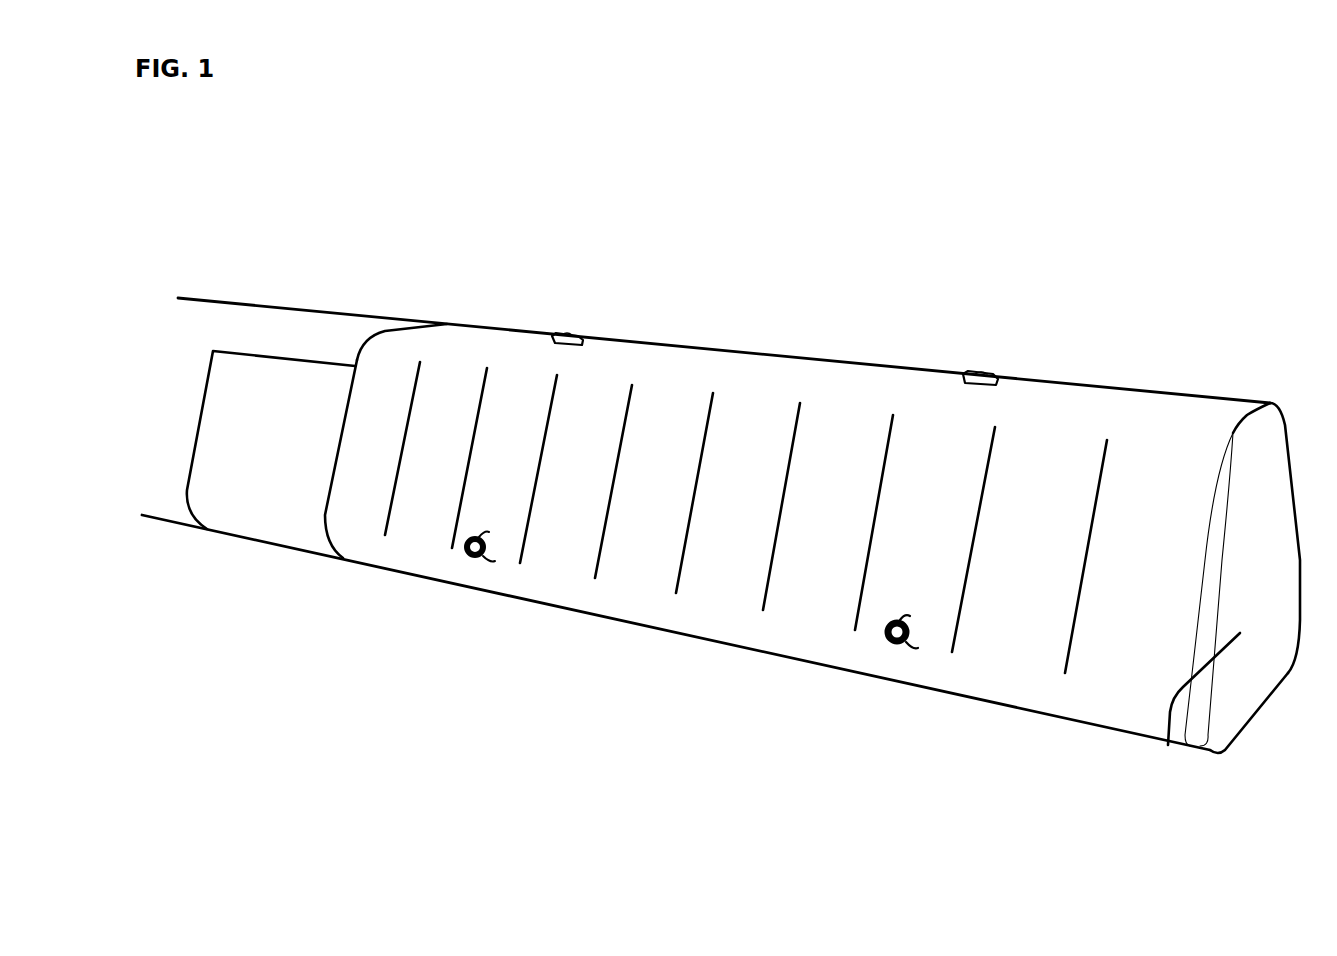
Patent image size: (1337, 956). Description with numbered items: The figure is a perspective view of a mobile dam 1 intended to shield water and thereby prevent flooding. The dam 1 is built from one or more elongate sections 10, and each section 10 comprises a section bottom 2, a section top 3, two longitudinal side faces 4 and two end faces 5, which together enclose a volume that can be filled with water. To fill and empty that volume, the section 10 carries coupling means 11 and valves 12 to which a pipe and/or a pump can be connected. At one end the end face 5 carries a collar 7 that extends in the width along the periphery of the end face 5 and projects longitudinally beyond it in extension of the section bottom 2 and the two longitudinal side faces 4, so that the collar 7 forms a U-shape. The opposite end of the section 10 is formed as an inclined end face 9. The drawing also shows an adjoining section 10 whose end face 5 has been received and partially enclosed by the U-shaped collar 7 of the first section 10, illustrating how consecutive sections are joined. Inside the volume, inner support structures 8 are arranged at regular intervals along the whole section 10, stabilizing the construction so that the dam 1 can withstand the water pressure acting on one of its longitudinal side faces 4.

The mobile dam 1 is at (831, 327).
The section bottom 2 is at (1260, 710).
The section top 3 is at (1248, 410).
The longitudinal side face 4 is at (1290, 490).
The end face 5 is at (1168, 748).
The collar 7 is at (268, 502).
The inner support structure 8 is at (680, 570).
The inclined end face 9 is at (1203, 738).
The elongate section 10 is at (287, 323).
The coupling means 11 is at (563, 336).
The valve 12 is at (887, 643).